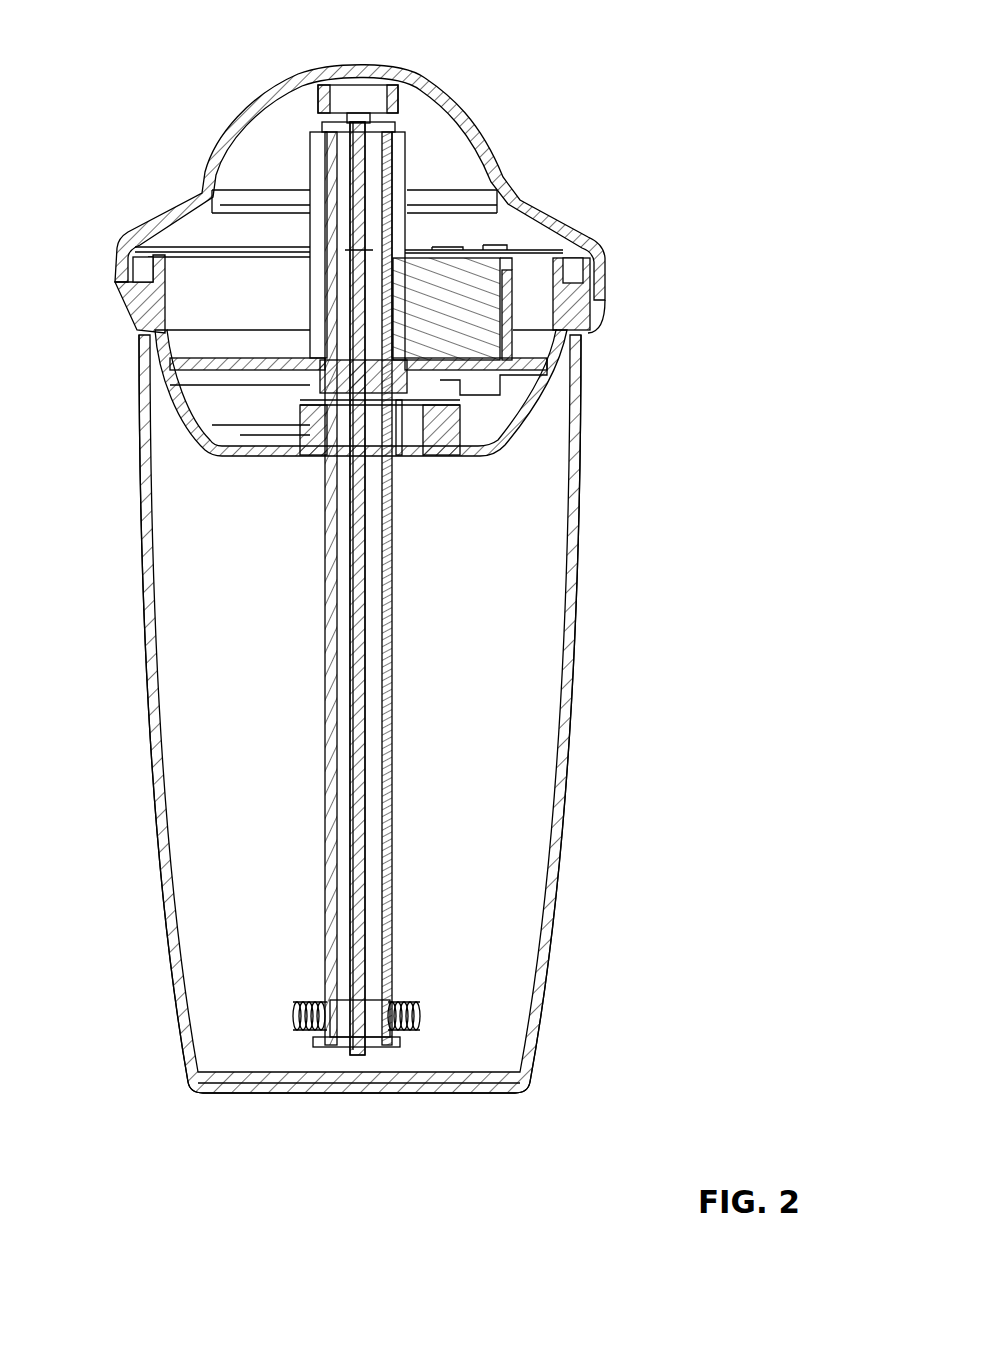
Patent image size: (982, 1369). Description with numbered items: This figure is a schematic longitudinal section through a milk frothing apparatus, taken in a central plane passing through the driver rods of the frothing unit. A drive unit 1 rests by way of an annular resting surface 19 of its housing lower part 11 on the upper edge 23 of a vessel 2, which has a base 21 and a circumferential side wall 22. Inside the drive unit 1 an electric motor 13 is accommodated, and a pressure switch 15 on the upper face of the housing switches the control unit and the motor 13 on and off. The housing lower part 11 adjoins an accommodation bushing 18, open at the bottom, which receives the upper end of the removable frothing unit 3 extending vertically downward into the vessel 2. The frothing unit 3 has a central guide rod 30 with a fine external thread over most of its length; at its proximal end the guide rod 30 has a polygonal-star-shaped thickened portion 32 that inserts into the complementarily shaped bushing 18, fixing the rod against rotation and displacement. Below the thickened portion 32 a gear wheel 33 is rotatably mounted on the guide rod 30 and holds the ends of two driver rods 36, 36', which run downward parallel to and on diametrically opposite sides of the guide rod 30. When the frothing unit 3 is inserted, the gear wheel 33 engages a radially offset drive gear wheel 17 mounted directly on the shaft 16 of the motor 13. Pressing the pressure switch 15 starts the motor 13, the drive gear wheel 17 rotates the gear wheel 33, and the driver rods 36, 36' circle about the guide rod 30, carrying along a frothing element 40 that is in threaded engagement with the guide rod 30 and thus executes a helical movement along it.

The drive unit 1 is at (150, 141).
The vessel 2 is at (184, 1112).
The frothing unit 3 is at (324, 783).
The housing lower part 11 is at (178, 408).
The electric motor 13 is at (467, 284).
The pressure switch 15 is at (398, 84).
The shaft 16 is at (430, 418).
The drive gear wheel 17 is at (466, 427).
The accommodation bushing 18 is at (312, 388).
The annular resting surface 19 is at (148, 326).
The base 21 is at (464, 1083).
The circumferential side wall 22 is at (548, 932).
The upper edge 23 is at (586, 344).
The central guide rod 30 is at (358, 792).
The thickened portion 32 is at (328, 412).
The gear wheel 33 is at (398, 412).
The driver rod 36 is at (292, 588).
The driver rod 36' is at (432, 588).
The frothing element 40 is at (296, 1014).